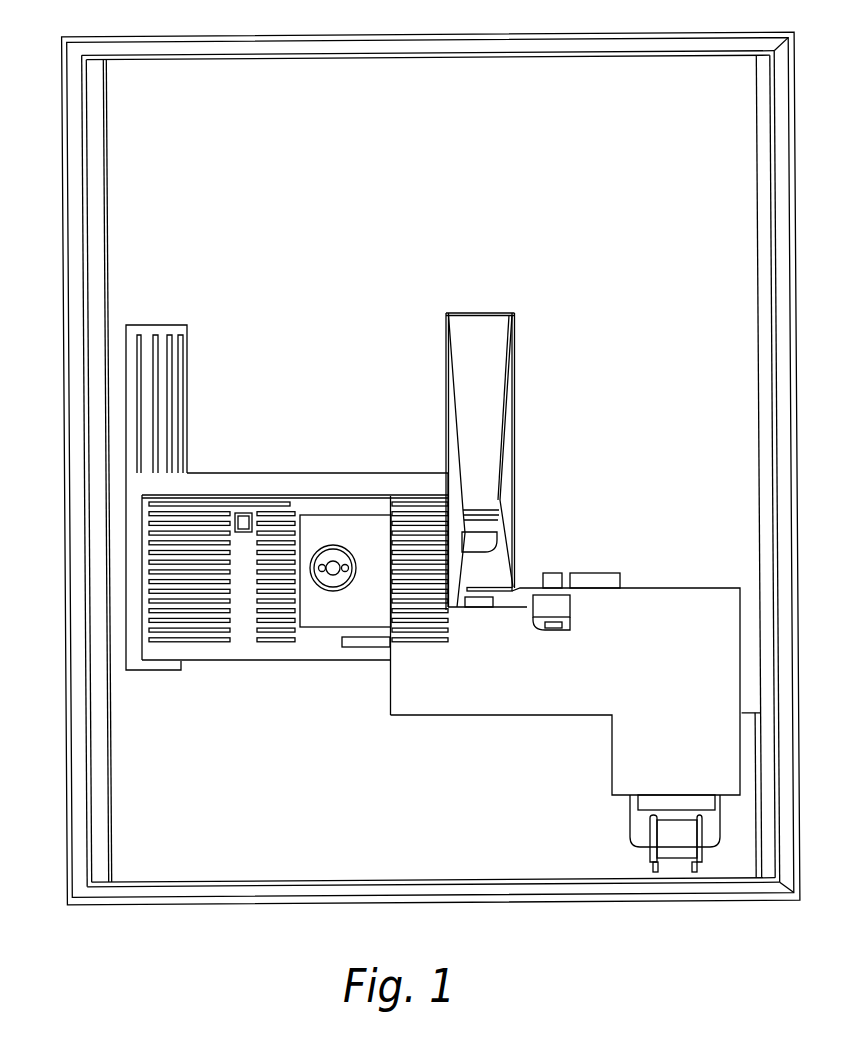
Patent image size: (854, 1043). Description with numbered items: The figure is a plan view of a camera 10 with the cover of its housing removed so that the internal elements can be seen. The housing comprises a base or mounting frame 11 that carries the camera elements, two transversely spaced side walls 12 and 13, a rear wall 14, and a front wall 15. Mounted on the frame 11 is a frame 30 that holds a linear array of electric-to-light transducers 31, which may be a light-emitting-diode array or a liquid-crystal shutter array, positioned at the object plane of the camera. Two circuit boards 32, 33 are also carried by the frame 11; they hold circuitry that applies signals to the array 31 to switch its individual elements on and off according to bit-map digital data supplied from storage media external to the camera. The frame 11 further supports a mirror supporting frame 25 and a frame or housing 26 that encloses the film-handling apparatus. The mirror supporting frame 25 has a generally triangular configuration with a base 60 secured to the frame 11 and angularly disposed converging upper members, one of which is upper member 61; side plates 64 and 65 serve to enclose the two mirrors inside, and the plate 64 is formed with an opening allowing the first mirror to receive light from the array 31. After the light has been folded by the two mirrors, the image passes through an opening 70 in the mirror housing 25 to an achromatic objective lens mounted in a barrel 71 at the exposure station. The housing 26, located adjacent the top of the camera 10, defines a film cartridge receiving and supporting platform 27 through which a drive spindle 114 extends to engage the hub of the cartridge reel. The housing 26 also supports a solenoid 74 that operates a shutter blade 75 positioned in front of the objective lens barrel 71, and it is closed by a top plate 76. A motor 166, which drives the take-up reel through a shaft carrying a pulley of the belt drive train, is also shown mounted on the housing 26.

The camera 10 is at (247, 30).
The base or mounting frame 11 is at (145, 727).
The side wall 12 is at (417, 58).
The side wall 13 is at (447, 903).
The rear wall 14 is at (795, 302).
The front wall 15 is at (65, 383).
The mirror supporting frame 25 is at (490, 305).
The frame or housing 26 is at (666, 586).
The film cartridge receiving and supporting platform 27 is at (344, 538).
The frame 30 is at (153, 671).
The linear array of electric-to-light transducers 31 is at (182, 370).
The circuit board 32 is at (138, 352).
The circuit board 33 is at (160, 337).
The base 60 is at (515, 440).
The upper member 61 is at (513, 393).
The side plate 64 is at (452, 440).
The side plate 65 is at (508, 485).
The opening 70 is at (487, 553).
The barrel 71 is at (480, 602).
The solenoid 74 is at (547, 605).
The shutter blade 75 is at (496, 588).
The top plate 76 is at (665, 671).
The drive spindle 114 is at (356, 568).
The motor 166 is at (642, 830).